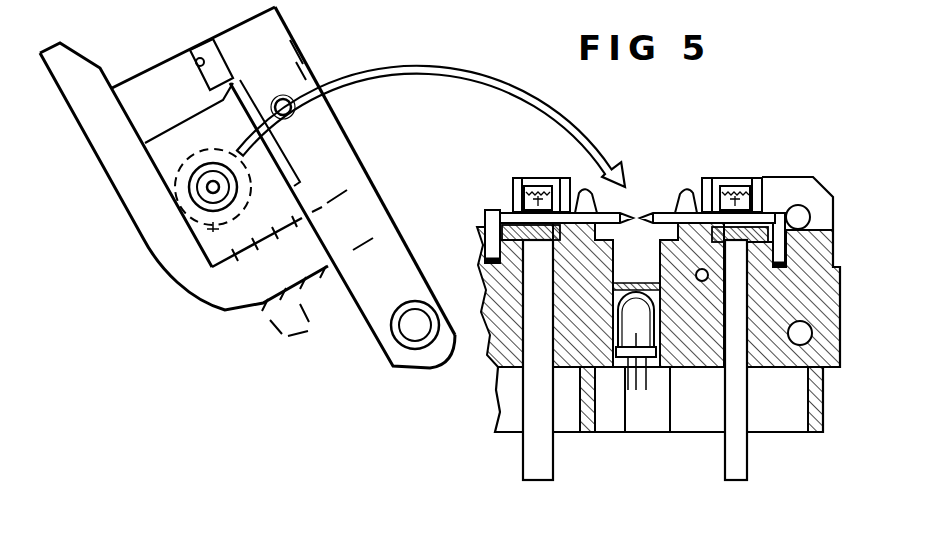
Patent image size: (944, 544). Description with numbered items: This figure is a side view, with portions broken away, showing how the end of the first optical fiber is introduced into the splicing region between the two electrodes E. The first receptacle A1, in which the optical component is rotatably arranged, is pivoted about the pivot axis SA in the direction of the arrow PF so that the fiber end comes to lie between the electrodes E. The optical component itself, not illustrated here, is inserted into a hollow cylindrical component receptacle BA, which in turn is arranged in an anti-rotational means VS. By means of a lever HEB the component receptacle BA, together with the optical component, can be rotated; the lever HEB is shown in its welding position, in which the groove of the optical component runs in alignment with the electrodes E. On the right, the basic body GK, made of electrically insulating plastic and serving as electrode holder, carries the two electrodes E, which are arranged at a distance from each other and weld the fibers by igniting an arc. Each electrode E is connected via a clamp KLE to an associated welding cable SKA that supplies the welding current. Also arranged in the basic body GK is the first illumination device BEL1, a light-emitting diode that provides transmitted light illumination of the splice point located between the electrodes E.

The anti-rotational means VS is at (190, 182).
The component receptacle BA is at (200, 215).
The first receptacle A1 is at (210, 312).
The lever HEB is at (298, 321).
The pivot axis SA is at (414, 327).
The arrow PF is at (486, 86).
The electrodes E is at (583, 203).
The clamps KLE is at (765, 227).
The basic body GK is at (824, 295).
The welding cables SKA is at (540, 443).
The first illumination device BEL1 is at (636, 345).